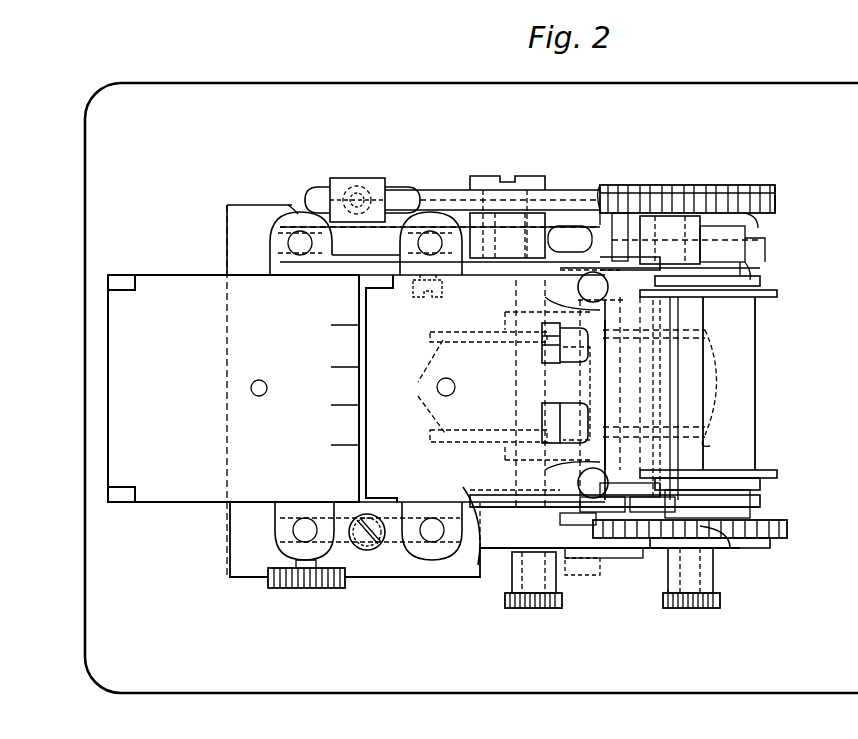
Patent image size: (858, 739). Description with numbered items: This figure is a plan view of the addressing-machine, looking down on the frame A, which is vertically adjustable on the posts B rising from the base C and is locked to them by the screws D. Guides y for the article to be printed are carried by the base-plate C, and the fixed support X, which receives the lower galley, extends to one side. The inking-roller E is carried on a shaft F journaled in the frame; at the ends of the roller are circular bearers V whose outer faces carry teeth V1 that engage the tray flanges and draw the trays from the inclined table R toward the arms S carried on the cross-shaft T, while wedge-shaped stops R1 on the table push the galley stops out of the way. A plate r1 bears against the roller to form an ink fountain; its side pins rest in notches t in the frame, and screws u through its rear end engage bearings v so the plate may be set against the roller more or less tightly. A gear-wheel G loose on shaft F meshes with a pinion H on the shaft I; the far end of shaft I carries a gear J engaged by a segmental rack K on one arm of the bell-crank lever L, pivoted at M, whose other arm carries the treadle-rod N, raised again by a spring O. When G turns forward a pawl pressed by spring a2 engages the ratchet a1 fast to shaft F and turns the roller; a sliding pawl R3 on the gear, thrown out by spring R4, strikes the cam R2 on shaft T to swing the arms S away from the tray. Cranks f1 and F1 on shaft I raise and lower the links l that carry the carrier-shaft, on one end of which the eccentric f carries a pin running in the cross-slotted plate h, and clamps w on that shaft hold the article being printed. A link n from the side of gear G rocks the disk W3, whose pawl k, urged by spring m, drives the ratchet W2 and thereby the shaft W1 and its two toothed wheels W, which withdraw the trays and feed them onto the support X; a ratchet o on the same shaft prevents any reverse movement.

The base C is at (305, 96).
The fixed support X is at (118, 384).
The inclined table R is at (368, 384).
The frame A is at (305, 280).
The posts B is at (296, 243).
The rod N is at (318, 202).
The spring O is at (376, 192).
The bell-crank lever L is at (448, 191).
The pivot M is at (500, 176).
The segmental rack K is at (600, 190).
The crank F1 is at (697, 186).
The gear J is at (770, 187).
The eccentric f is at (650, 250).
The plate h is at (758, 222).
The clamps w is at (766, 240).
The notches t is at (636, 264).
The crank f1 is at (742, 272).
The links l is at (760, 282).
The teeth V1 is at (778, 291).
The circular bearers V is at (762, 302).
The inking-roller E is at (750, 366).
The plate r1 is at (662, 398).
The arms S is at (716, 382).
The shaft I is at (710, 445).
The screws u is at (580, 288).
The bearings v is at (566, 293).
The toothed wheels W is at (473, 392).
The shaft W1 is at (520, 388).
The wedge-shaped stops R1 is at (545, 344).
The shaft T is at (578, 410).
The screws D is at (418, 298).
The guides y is at (232, 558).
The pawl k is at (498, 540).
The spring m is at (470, 494).
The ratchet o is at (470, 490).
The ratchet W2 is at (510, 538).
The disk W3 is at (490, 546).
The sliding pawl R3 is at (615, 504).
The spring R4 is at (652, 505).
The cam R2 is at (562, 518).
The gear-wheel G is at (788, 538).
The spring a2 is at (770, 546).
The pinion H is at (730, 548).
The ratchet a1 is at (686, 552).
The shaft F is at (668, 586).
The link n is at (606, 550).